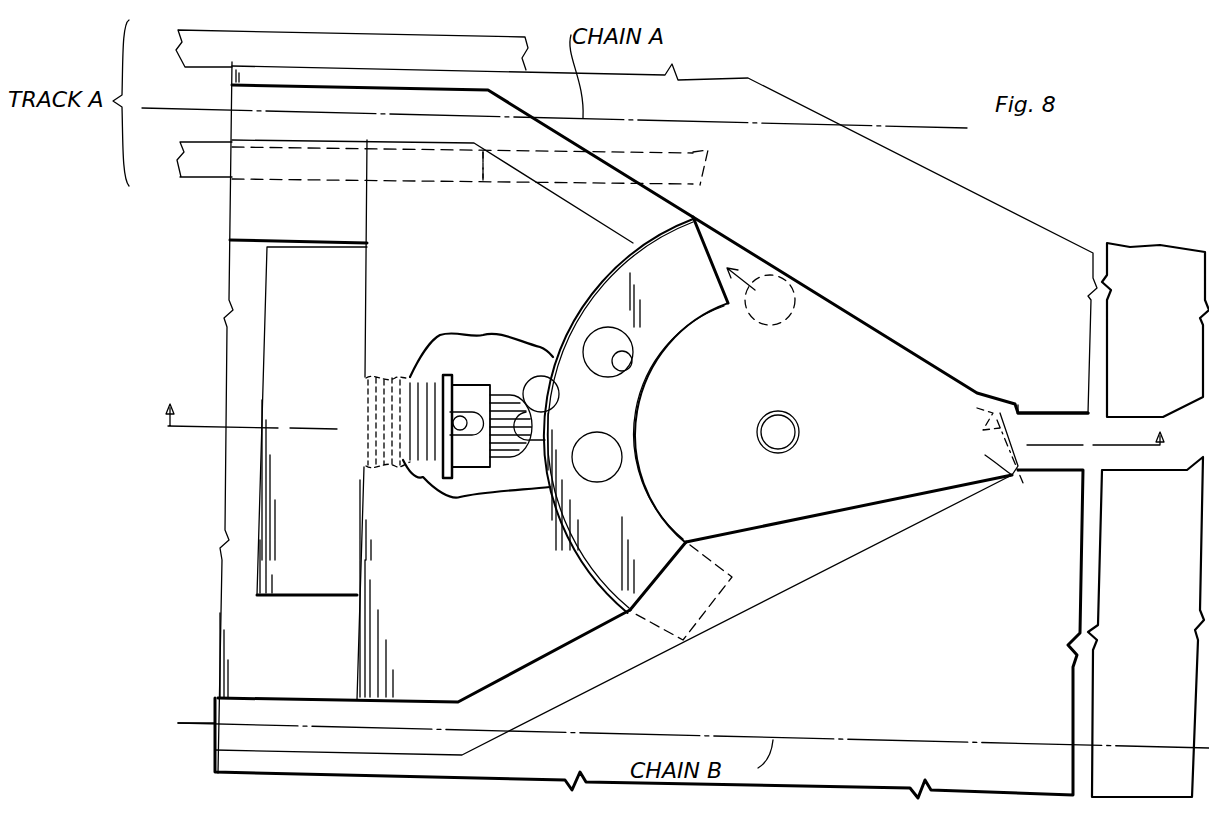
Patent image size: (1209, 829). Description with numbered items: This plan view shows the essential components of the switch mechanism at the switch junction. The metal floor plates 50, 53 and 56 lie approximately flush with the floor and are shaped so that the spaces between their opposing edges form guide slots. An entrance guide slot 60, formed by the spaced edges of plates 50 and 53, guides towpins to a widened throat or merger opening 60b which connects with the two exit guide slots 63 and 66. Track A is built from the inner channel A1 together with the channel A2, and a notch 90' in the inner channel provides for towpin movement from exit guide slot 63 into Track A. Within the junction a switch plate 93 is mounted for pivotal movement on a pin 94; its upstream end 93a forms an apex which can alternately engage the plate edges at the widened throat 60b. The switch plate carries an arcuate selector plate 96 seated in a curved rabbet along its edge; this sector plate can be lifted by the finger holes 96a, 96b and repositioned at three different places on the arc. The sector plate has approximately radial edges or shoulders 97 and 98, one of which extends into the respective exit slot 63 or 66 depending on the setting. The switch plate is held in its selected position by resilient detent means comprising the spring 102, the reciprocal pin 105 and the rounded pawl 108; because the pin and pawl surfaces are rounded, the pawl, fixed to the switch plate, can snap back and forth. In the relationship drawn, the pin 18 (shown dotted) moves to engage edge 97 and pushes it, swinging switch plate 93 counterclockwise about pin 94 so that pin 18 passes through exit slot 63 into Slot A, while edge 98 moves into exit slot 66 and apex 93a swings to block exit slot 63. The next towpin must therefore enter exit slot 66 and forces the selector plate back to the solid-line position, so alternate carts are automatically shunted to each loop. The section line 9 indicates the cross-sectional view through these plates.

The inner channel A1 is at (210, 163).
The channel A2 is at (388, 52).
The section line 9- 9 is at (672, 410).
The pin 18 is at (795, 285).
The metal floor plate 50 is at (870, 218).
The metal floor plate 53 is at (853, 717).
The metal floor plate 56 is at (472, 567).
The entrance guide slot 60 is at (1048, 430).
The widened throat or merger opening 60b is at (1018, 458).
The exit guide slot 63 is at (627, 140).
The exit guide slot 66 is at (788, 572).
The notch 90' is at (487, 188).
The switch plate 93 is at (742, 502).
The upstream end 93a is at (1000, 471).
The pin 94 is at (800, 433).
The arcuate selector plate 96 is at (587, 317).
The finger hole 96a is at (600, 457).
The finger hole 96b is at (620, 338).
The radial edge 97 is at (707, 240).
The radial edge 98 is at (635, 587).
The spring 102 is at (432, 380).
The reciprocal pin 105 is at (503, 423).
The rounded pawl 108 is at (532, 388).